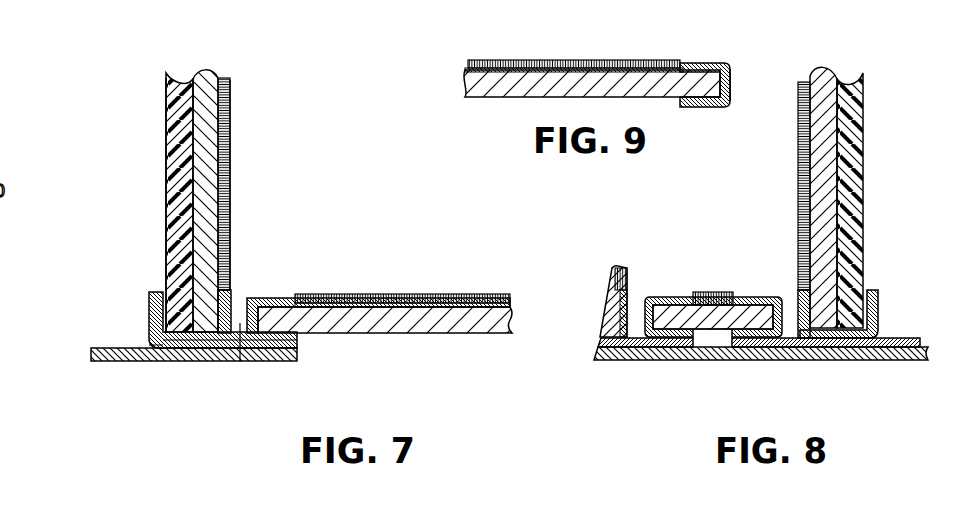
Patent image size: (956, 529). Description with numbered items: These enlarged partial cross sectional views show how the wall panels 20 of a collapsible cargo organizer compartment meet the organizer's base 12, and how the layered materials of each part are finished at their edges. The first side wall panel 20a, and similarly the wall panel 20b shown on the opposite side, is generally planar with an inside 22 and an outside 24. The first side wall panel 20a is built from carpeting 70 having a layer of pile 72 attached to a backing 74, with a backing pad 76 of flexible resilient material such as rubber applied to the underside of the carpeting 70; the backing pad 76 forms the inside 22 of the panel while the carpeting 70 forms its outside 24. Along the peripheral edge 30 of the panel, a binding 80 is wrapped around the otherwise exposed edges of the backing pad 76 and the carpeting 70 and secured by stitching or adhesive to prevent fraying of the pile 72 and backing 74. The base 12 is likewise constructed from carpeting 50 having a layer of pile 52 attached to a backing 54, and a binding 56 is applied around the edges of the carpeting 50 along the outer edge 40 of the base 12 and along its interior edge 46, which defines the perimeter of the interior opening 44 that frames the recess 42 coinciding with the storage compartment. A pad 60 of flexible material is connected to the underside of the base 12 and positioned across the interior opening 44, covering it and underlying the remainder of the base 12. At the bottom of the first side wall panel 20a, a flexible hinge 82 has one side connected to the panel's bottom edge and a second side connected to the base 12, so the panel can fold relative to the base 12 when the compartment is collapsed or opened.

In FIG. 7, the base 12 is at (420, 337).
In FIG. 9, the base 12 is at (493, 102).
In FIG. 8, the base 12 is at (669, 347).
In FIG. 7, the wall panels 20 is at (181, 199).
In FIG. 8, the wall panels 20 is at (864, 197).
In FIG. 7, the first side wall panel 20a is at (200, 201).
In FIG. 8, the wall panel 20b is at (863, 193).
In FIG. 7, the inside 22 is at (166, 210).
In FIG. 7, the outside 24 is at (231, 210).
In FIG. 7, the peripheral edge 30 is at (226, 391).
In FIG. 9, the outer edge 40 is at (730, 87).
In FIG. 7, the recess 42 is at (133, 332).
In FIG. 8, the recess 42 is at (839, 314).
In FIG. 7, the interior opening 44 is at (165, 320).
In FIG. 8, the interior opening 44 is at (870, 303).
In FIG. 7, the interior edge 46 is at (240, 362).
In FIG. 8, the interior edge 46 is at (785, 314).
In FIG. 7, the carpeting 50 is at (402, 279).
In FIG. 9, the carpeting 50 is at (574, 37).
In FIG. 8, the carpeting 50 is at (648, 258).
In FIG. 7, the pile 52 is at (322, 318).
In FIG. 9, the pile 52 is at (553, 72).
In FIG. 8, the pile 52 is at (705, 312).
In FIG. 7, the backing 54 is at (323, 305).
In FIG. 9, the backing 54 is at (522, 72).
In FIG. 8, the backing 54 is at (718, 293).
In FIG. 7, the binding 56 is at (273, 298).
In FIG. 9, the binding 56 is at (707, 65).
In FIG. 8, the binding 56 is at (668, 297).
In FIG. 7, the pad 60 is at (120, 362).
In FIG. 8, the pad 60 is at (897, 360).
In FIG. 7, the carpeting 70 is at (246, 201).
In FIG. 7, the pile 72 is at (222, 122).
In FIG. 7, the backing 74 is at (267, 87).
In FIG. 7, the backing pad 76 is at (166, 155).
In FIG. 7, the binding 80 is at (230, 305).
In FIG. 7, the hinge 82 is at (148, 362).